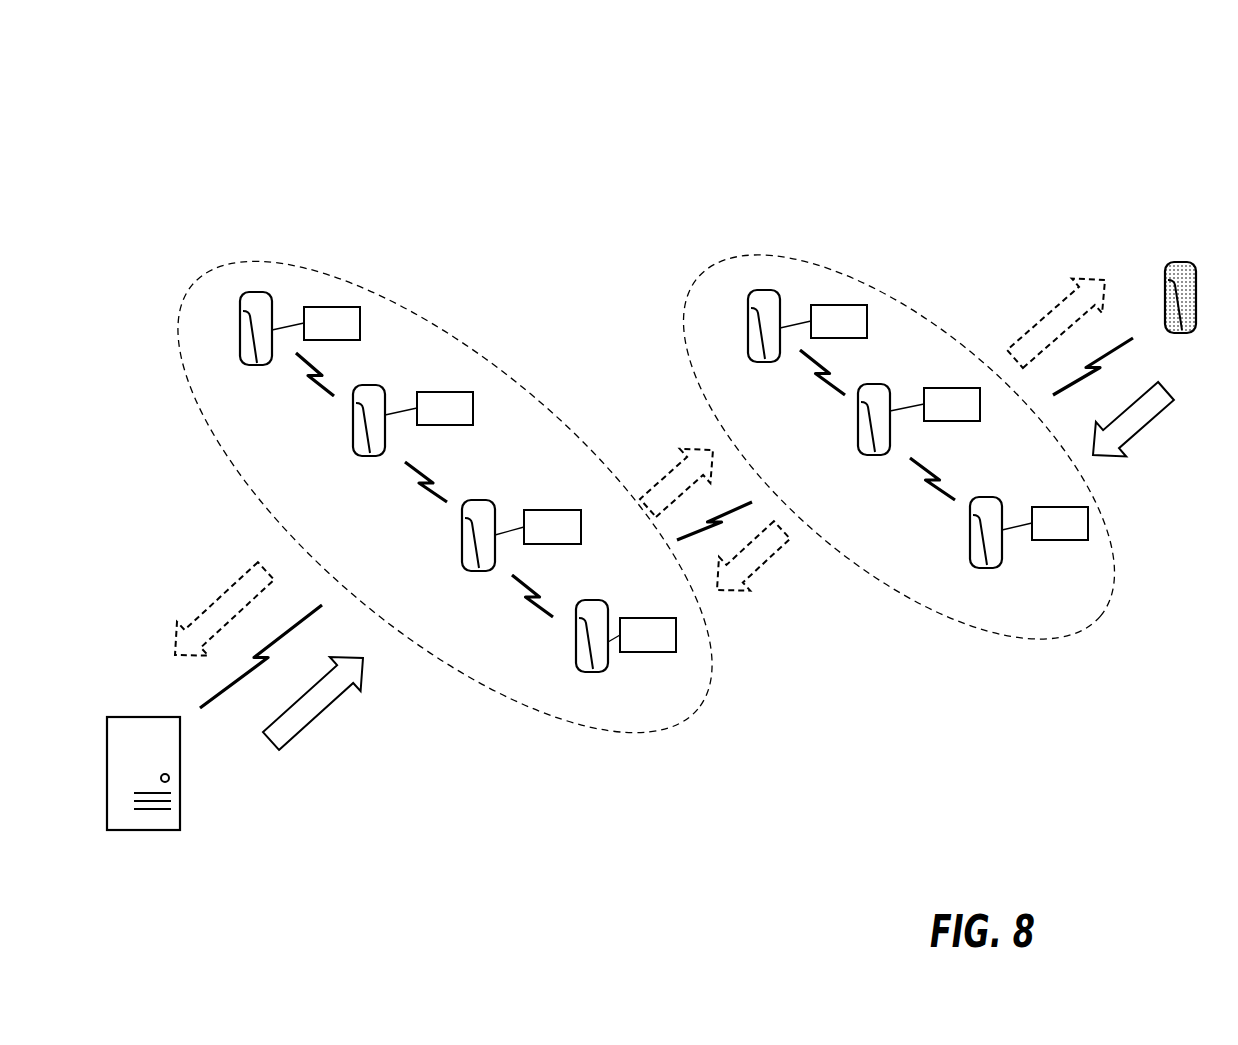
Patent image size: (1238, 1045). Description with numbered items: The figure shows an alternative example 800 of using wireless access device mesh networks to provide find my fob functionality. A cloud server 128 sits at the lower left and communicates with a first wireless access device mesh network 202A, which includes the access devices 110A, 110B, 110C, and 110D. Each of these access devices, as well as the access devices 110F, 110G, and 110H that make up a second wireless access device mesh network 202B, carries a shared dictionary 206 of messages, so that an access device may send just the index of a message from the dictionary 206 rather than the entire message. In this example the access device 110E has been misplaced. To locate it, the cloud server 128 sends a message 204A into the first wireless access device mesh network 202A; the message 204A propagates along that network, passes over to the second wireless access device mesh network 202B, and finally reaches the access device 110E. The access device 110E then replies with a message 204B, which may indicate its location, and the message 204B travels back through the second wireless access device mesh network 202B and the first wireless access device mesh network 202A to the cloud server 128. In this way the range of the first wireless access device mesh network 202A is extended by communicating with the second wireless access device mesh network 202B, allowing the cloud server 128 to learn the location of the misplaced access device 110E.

The alternative example 800 is at (222, 57).
The cloud server 128 is at (160, 863).
The access device 110A is at (280, 392).
The access device 110B is at (391, 484).
The access device 110C is at (499, 601).
The access device 110D is at (615, 698).
The access device 110E is at (1201, 365).
The access device 110F is at (787, 388).
The access device 110G is at (896, 483).
The access device 110H is at (1007, 597).
The dictionary 206 is at (349, 336).
The first wireless access device mesh network 202A is at (403, 569).
The second wireless access device mesh network 202B is at (911, 559).
The message 204A is at (276, 766).
The message 204B is at (215, 586).